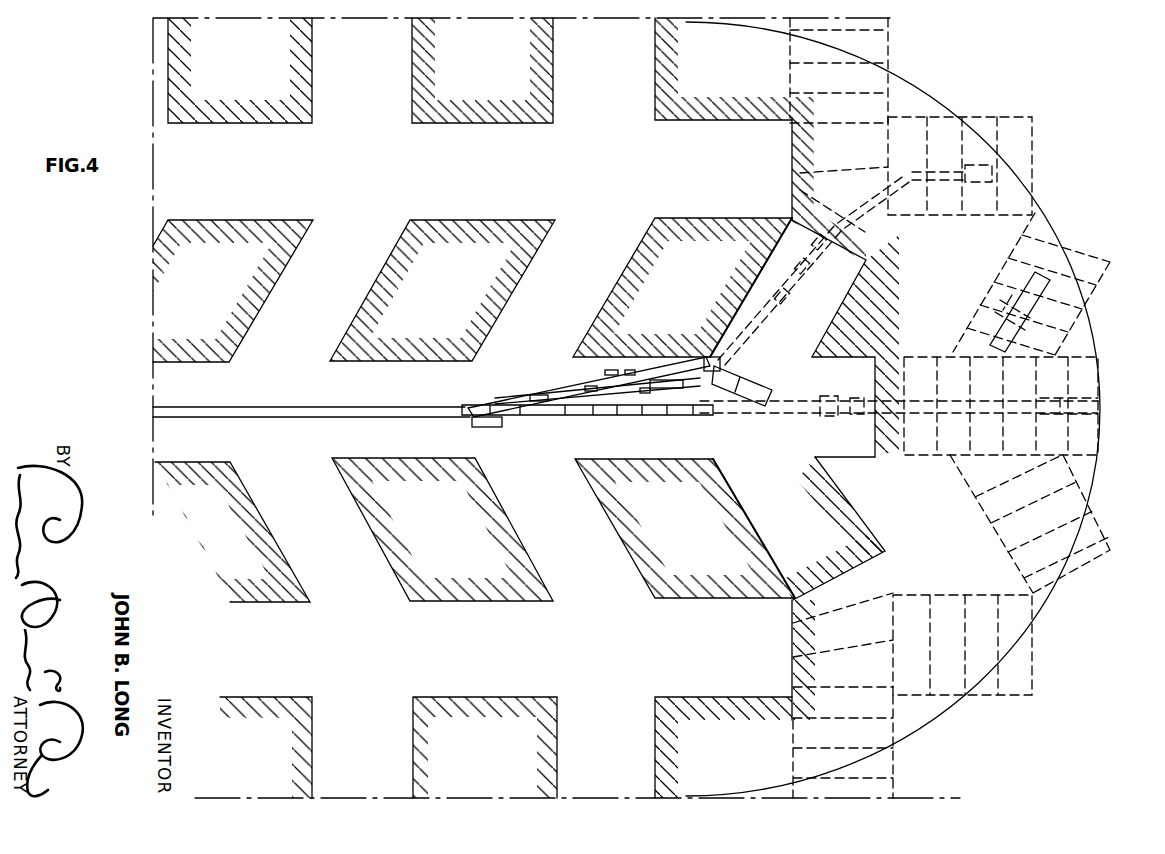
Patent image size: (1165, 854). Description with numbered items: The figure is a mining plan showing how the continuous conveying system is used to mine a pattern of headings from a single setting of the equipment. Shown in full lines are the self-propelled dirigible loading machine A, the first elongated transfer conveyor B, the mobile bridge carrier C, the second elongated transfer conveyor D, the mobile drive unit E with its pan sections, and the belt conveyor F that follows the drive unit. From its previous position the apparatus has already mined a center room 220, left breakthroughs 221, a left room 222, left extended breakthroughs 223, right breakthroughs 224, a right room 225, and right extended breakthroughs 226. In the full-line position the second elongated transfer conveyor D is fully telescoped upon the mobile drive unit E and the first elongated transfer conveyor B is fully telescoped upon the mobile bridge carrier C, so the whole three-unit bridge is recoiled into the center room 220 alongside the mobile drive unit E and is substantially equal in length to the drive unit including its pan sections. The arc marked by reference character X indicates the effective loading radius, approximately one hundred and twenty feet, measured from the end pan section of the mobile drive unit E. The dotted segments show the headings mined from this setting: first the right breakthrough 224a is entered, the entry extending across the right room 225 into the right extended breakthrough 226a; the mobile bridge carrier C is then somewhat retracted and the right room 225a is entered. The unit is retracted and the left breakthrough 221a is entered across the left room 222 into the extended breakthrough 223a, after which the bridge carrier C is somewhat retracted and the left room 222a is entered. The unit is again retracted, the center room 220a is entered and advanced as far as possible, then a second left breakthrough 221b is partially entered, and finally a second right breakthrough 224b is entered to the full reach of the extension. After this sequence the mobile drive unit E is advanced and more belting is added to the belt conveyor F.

The center room 220 is at (386, 395).
The left breakthroughs 221 is at (318, 317).
The left room 222 is at (478, 195).
The left extended breakthroughs 223 is at (372, 100).
The right breakthroughs 224 is at (333, 542).
The right room 225 is at (493, 667).
The right extended breakthroughs 226 is at (369, 765).
The center room 220a is at (1063, 458).
The left breakthrough 221a is at (800, 173).
The second left breakthrough 221b is at (1087, 272).
The left room 222a is at (995, 120).
The extended breakthrough 223a is at (878, 56).
The right breakthrough 224a is at (863, 597).
The second right breakthrough 224b is at (1093, 523).
The right room 225a is at (995, 690).
The right extended breakthrough 226a is at (895, 745).
The self-propelled dirigible loading machine A is at (770, 390).
The first elongated transfer conveyor B is at (643, 368).
The mobile bridge carrier C is at (808, 262).
The second elongated transfer conveyor D is at (532, 397).
The mobile drive unit E is at (578, 414).
The belt conveyor F is at (292, 416).
The effective loading radius X is at (935, 96).